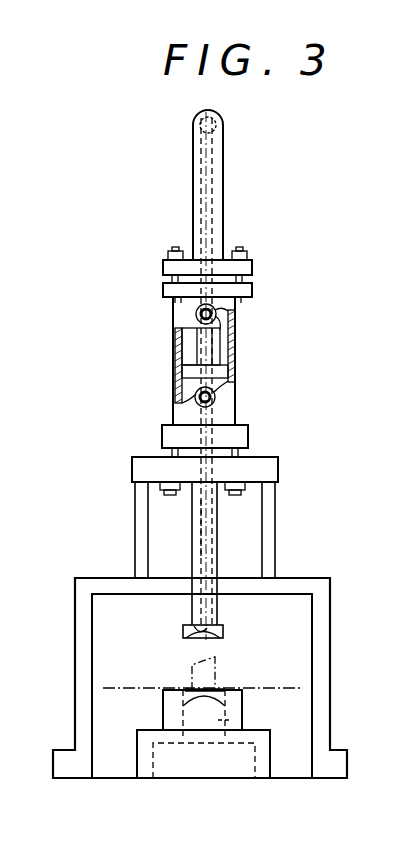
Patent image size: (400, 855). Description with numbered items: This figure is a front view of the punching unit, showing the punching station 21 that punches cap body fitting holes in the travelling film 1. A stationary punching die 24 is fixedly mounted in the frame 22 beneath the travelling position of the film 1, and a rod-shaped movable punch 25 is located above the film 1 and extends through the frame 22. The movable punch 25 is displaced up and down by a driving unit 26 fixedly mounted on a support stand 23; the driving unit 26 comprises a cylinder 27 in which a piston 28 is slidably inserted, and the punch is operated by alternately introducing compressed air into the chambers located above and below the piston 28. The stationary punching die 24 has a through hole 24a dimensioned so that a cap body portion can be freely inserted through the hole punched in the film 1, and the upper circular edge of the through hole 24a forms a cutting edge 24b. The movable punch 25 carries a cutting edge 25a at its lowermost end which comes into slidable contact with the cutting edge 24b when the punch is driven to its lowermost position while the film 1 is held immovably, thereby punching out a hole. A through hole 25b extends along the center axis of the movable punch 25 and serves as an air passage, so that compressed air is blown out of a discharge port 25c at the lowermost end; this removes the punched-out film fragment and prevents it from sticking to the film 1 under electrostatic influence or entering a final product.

The film 1 is at (251, 688).
The punching station 21 is at (283, 292).
The frame 22 is at (329, 651).
The support stand 23 is at (272, 473).
The stationary punching die 24 is at (161, 712).
The through hole 24a is at (234, 720).
The cutting edge 24b is at (190, 690).
The movable punch 25 is at (222, 568).
The cutting edge 25a is at (186, 632).
The through hole 25b is at (197, 548).
The discharge port 25c is at (210, 640).
The driving unit 26 is at (170, 356).
The cylinder 27 is at (236, 336).
The piston 28 is at (222, 377).